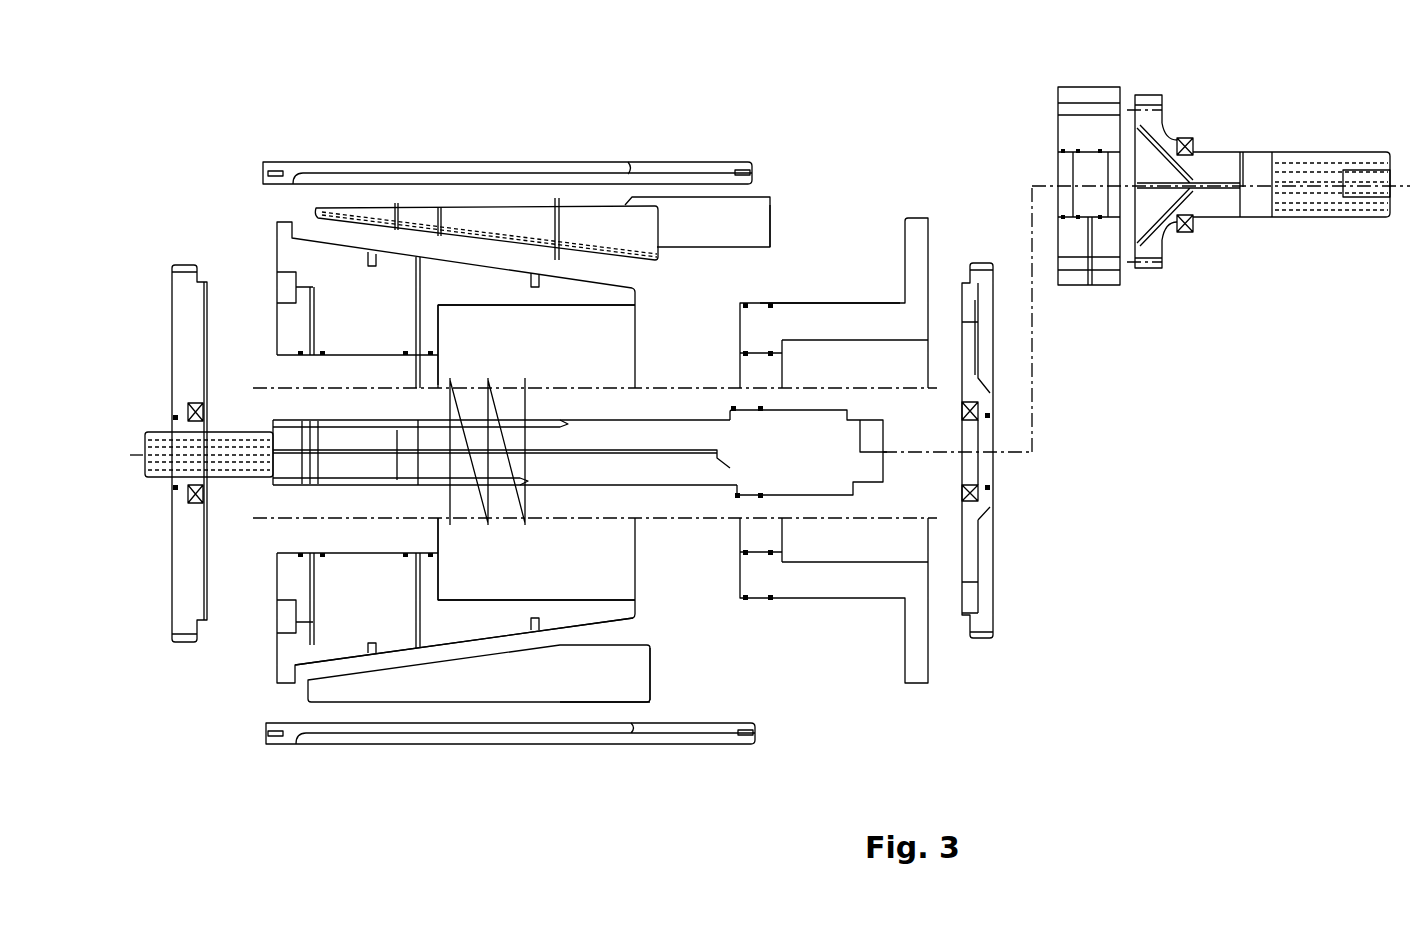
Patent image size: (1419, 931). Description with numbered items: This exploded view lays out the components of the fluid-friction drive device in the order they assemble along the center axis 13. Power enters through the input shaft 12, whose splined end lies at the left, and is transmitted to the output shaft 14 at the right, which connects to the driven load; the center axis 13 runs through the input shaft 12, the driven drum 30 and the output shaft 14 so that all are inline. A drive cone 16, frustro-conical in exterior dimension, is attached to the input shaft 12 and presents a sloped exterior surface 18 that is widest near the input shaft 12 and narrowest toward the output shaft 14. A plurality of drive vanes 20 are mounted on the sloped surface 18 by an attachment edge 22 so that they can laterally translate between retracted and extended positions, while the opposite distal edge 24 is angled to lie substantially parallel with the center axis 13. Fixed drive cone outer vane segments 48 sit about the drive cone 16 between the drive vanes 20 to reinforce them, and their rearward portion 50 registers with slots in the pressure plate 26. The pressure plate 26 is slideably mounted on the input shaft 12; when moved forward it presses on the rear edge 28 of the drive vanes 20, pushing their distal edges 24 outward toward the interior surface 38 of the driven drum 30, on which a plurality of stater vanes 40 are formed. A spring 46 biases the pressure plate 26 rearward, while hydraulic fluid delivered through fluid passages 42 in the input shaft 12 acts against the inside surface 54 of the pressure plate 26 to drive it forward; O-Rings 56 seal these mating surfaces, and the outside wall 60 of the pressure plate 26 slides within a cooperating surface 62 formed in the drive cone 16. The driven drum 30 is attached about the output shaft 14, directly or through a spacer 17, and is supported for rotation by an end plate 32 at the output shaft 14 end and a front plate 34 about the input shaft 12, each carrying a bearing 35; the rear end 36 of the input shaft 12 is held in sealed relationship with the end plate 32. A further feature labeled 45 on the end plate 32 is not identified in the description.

The input shaft 12 is at (218, 430).
The center axis 13 is at (143, 455).
The output shaft 14 is at (1212, 160).
The drive cone 16 is at (317, 262).
The spacer 17 is at (1082, 88).
The sloped exterior surface 18 is at (613, 283).
The drive vanes 20 is at (621, 675).
The attachment edge 22 is at (511, 650).
The distal edge 24 is at (620, 690).
The pressure plate 26 is at (918, 230).
The rear edge 28 is at (650, 658).
The driven drum 30 is at (322, 163).
The end plate 32 is at (993, 552).
The front plate 34 is at (192, 307).
The bearing 35 is at (203, 497).
The rear end 36 is at (848, 418).
The interior surface 38 is at (312, 185).
The stater vanes 40 is at (585, 170).
The fluid passages 42 is at (417, 485).
The flange insert 45 is at (982, 352).
The spring 46 is at (525, 499).
The drive cone outer vane segments 48 is at (770, 201).
The rearward portion 50 is at (745, 235).
The inside surface 54 is at (822, 342).
The O-Rings 56 is at (733, 408).
The outside wall 60 is at (837, 302).
The cooperating surface 62 is at (580, 307).